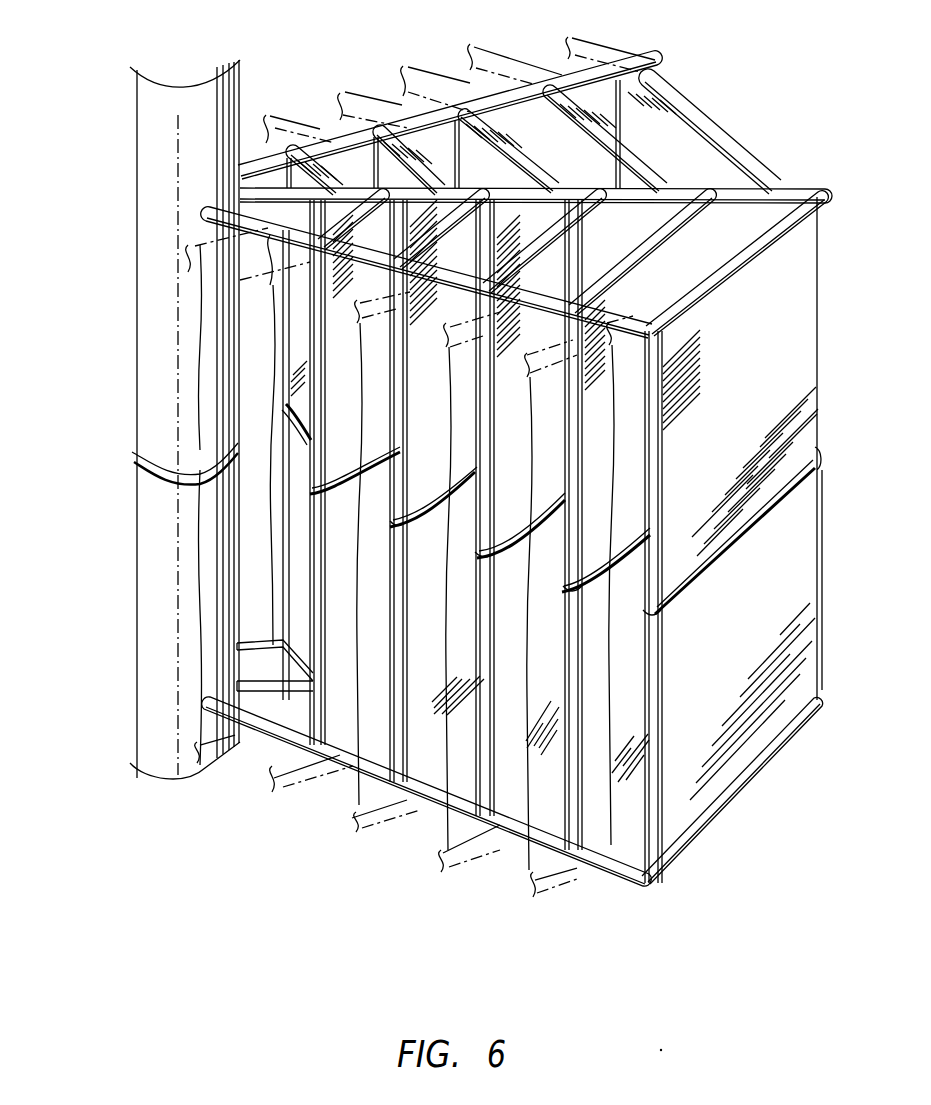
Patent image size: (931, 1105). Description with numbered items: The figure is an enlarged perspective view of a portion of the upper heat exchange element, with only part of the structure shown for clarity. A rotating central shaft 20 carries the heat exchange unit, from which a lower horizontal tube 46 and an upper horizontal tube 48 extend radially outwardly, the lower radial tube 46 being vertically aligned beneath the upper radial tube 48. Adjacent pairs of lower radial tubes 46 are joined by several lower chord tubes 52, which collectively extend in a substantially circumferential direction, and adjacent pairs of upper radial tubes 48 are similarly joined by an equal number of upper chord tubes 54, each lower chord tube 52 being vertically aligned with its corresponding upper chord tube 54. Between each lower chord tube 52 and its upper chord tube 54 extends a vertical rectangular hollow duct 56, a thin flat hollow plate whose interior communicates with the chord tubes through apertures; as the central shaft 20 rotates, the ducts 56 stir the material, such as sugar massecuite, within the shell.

The central shaft 20 is at (153, 361).
The lower horizontal tubes 46 is at (437, 825).
The upper horizontal tubes 48 is at (735, 197).
The chord tubes 52 is at (515, 775).
The chord tubes 54 is at (321, 163).
The vertical rectangular hollow duct 56 is at (360, 379).